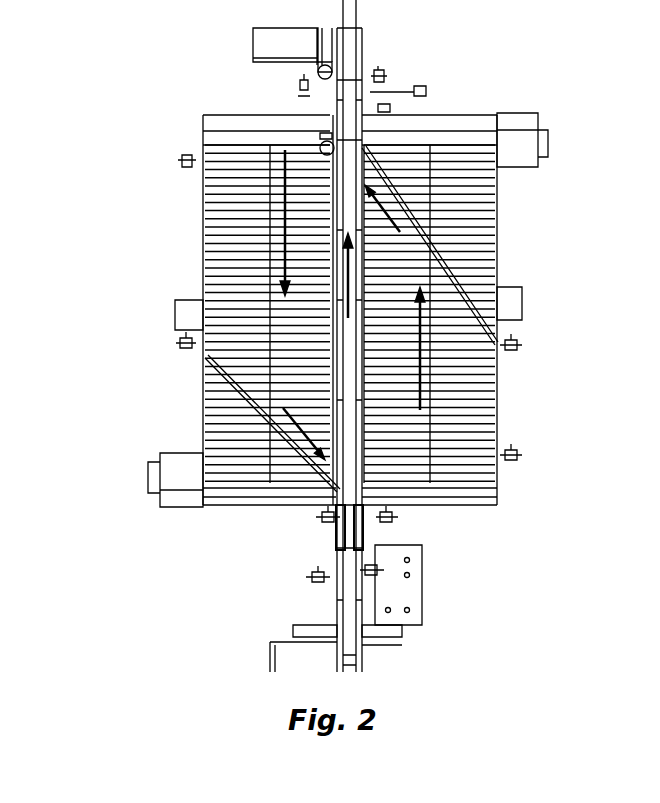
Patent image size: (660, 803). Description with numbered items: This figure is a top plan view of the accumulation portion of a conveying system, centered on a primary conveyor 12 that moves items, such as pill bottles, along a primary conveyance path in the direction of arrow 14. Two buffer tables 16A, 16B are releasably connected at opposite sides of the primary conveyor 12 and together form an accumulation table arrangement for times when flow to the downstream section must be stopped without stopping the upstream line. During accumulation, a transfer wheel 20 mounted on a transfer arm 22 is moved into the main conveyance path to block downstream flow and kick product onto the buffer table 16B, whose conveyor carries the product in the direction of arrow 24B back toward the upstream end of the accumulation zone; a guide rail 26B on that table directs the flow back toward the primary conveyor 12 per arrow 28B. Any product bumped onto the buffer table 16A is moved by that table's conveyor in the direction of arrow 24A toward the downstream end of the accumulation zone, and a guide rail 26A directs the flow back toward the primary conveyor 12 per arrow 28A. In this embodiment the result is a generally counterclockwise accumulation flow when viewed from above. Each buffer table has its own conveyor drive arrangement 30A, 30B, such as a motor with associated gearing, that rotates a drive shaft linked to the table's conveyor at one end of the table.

The primary conveyor 12 is at (350, 373).
The arrow 14 is at (350, 267).
The buffer table 16A is at (505, 255).
The buffer table 16B is at (196, 258).
The transfer wheel 20 is at (321, 152).
The transfer arm 22 is at (327, 113).
The arrow 24A is at (420, 375).
The arrow 24B is at (284, 219).
The guide rail 26A is at (463, 303).
The guide rail 26B is at (270, 418).
The arrow 28A is at (405, 172).
The arrow 28B is at (308, 447).
The conveyor drive arrangement 30A is at (535, 122).
The conveyor drive arrangement 30B is at (150, 500).